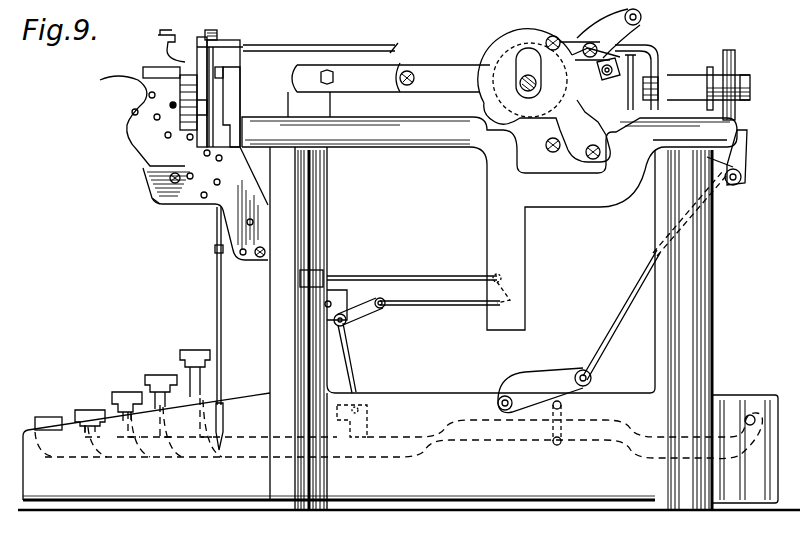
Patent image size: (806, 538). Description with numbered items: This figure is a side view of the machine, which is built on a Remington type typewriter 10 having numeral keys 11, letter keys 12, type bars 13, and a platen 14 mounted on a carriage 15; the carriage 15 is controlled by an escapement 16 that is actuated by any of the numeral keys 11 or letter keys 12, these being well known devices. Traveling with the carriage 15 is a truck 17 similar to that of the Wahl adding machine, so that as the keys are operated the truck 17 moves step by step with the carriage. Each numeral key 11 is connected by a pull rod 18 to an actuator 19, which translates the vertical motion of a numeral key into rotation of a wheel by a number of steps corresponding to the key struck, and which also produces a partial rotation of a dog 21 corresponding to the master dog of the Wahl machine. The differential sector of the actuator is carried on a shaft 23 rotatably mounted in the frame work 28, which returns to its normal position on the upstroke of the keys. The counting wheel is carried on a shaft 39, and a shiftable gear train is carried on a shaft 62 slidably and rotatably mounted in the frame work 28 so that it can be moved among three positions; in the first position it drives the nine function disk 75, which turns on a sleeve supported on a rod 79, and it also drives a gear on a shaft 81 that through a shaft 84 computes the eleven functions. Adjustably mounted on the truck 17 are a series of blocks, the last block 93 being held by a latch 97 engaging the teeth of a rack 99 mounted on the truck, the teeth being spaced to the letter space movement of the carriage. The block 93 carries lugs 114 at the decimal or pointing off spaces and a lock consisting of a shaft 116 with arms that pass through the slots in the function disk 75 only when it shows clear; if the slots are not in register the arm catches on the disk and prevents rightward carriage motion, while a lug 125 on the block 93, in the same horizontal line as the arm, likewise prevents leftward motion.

The typewriter 10 is at (413, 140).
The numeral keys 11 is at (190, 350).
The letter keys 12 is at (120, 392).
The type bars 13 is at (358, 276).
The platen 14 is at (527, 78).
The carriage 15 is at (449, 73).
The escapement 16 is at (738, 117).
The truck 17 is at (200, 63).
The pull rod 18 is at (216, 287).
The actuator 19 is at (213, 207).
The dog 21 is at (213, 130).
The shaft 23 is at (172, 200).
The frame work 28 is at (240, 104).
The shaft 39 is at (200, 107).
The shaft 62 is at (171, 106).
The function disk 75 is at (149, 95).
The rod 79 is at (155, 120).
The shaft 81 is at (132, 112).
The shaft 84 is at (100, 80).
The block 93 is at (143, 72).
The latch 97 is at (187, 62).
The rack 99 is at (190, 62).
The lugs 114 is at (146, 159).
The shaft 116 is at (182, 100).
The lug 125 is at (197, 107).